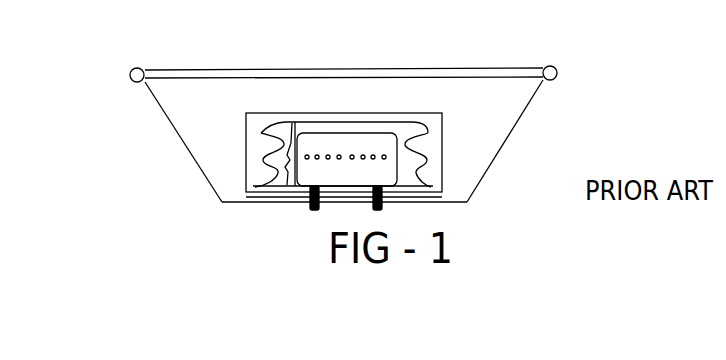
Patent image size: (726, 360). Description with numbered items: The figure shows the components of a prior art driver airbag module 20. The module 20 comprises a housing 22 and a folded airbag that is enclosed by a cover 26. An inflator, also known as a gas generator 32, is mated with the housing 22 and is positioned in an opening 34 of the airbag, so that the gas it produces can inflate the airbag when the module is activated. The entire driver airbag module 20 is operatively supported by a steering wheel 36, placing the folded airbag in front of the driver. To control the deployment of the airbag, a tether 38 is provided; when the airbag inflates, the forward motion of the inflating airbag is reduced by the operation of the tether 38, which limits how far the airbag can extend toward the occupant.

The driver airbag module 20 is at (170, 143).
The housing 22 is at (257, 198).
The cover 26 is at (242, 140).
The gas generator 32 is at (368, 165).
The opening 34 is at (308, 190).
The steering wheel 36 is at (147, 101).
The tether 38 is at (295, 133).